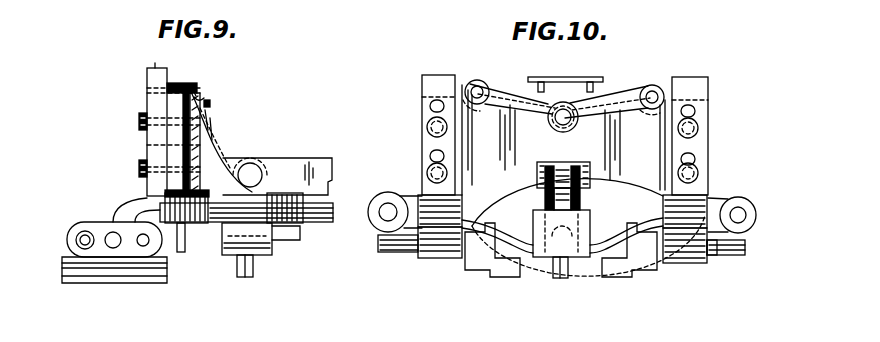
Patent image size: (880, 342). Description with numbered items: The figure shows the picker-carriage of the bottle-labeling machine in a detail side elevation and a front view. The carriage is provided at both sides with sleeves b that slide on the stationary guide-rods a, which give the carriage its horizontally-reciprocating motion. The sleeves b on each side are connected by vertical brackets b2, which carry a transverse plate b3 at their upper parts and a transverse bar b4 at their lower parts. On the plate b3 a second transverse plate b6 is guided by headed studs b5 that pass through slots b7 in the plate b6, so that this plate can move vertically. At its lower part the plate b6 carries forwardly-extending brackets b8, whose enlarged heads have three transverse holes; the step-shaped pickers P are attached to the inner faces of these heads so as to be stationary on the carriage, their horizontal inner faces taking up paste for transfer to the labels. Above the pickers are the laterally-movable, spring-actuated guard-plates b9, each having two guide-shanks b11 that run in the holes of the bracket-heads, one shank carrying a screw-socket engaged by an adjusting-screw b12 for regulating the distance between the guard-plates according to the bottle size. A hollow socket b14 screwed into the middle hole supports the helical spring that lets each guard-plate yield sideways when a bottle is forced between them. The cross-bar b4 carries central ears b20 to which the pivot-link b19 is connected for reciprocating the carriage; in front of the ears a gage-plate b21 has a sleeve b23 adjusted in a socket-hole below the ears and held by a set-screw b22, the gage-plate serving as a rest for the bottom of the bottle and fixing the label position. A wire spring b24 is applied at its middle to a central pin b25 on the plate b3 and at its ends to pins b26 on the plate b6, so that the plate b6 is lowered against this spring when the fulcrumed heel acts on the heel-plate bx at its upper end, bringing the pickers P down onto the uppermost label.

In FIG. 9, the sleeves b is at (190, 206).
In FIG. 10, the sleeves b is at (420, 205).
In FIG. 9, the heel-plate bx is at (158, 68).
In FIG. 10, the heel-plate bx is at (565, 77).
In FIG. 9, the vertical brackets b2 is at (208, 152).
In FIG. 9, the transverse plate b3 is at (172, 110).
In FIG. 10, the transverse plate b3 is at (422, 98).
In FIG. 9, the transverse bar b4 is at (262, 240).
In FIG. 10, the transverse bar b4 is at (505, 240).
In FIG. 9, the headed studs b5 is at (139, 125).
In FIG. 10, the headed studs b5 is at (437, 127).
In FIG. 9, the transverse plate b6 is at (150, 90).
In FIG. 10, the transverse plate b6 is at (440, 82).
In FIG. 10, the slots b7 is at (430, 110).
In FIG. 9, the forwardly-extending brackets b8 is at (120, 210).
In FIG. 10, the forwardly-extending brackets b8 is at (440, 260).
In FIG. 10, the guard-plates b9 is at (522, 272).
In FIG. 9, the guide-shanks b11 is at (146, 246).
In FIG. 9, the adjusting-screw b12 is at (78, 240).
In FIG. 10, the adjusting-screw b12 is at (716, 252).
In FIG. 9, the hollow socket b14 is at (110, 245).
In FIG. 10, the hollow socket b14 is at (385, 250).
In FIG. 9, the pivot-link b19 is at (322, 154).
In FIG. 10, the pivot-link b19 is at (578, 170).
In FIG. 9, the central ears b20 is at (258, 153).
In FIG. 10, the central ears b20 is at (545, 203).
In FIG. 9, the gage-plate b21 is at (181, 256).
In FIG. 10, the gage-plate b21 is at (556, 242).
In FIG. 9, the set-screw b22 is at (246, 278).
In FIG. 10, the set-screw b22 is at (563, 282).
In FIG. 9, the sleeve b23 is at (298, 239).
In FIG. 10, the sleeve b23 is at (563, 242).
In FIG. 9, the wire spring b24 is at (200, 100).
In FIG. 10, the wire spring b24 is at (488, 90).
In FIG. 9, the central pin b25 is at (210, 104).
In FIG. 10, the central pin b25 is at (578, 116).
In FIG. 9, the pins b26 is at (192, 90).
In FIG. 10, the pins b26 is at (477, 80).
In FIG. 9, the guide-rods a is at (254, 211).
In FIG. 10, the guide-rods a is at (378, 212).
In FIG. 9, the pickers P is at (115, 275).
In FIG. 10, the pickers P is at (492, 284).